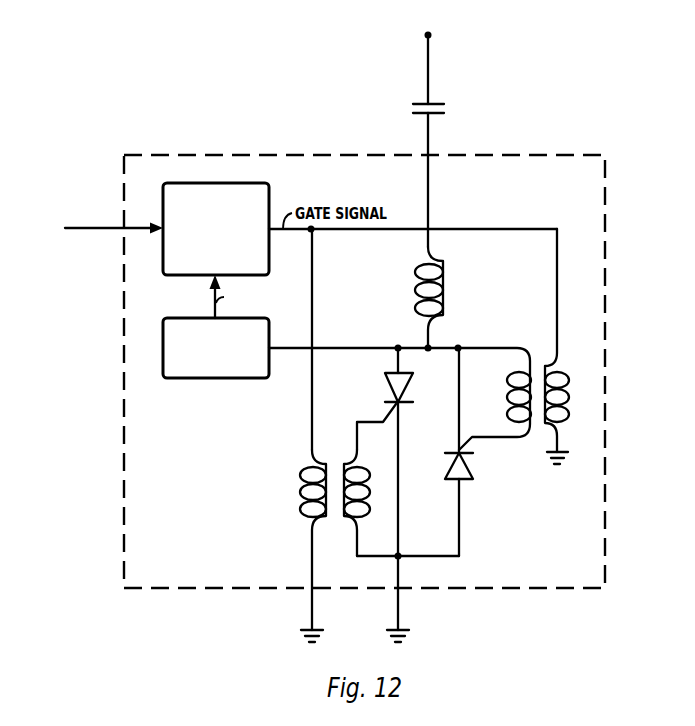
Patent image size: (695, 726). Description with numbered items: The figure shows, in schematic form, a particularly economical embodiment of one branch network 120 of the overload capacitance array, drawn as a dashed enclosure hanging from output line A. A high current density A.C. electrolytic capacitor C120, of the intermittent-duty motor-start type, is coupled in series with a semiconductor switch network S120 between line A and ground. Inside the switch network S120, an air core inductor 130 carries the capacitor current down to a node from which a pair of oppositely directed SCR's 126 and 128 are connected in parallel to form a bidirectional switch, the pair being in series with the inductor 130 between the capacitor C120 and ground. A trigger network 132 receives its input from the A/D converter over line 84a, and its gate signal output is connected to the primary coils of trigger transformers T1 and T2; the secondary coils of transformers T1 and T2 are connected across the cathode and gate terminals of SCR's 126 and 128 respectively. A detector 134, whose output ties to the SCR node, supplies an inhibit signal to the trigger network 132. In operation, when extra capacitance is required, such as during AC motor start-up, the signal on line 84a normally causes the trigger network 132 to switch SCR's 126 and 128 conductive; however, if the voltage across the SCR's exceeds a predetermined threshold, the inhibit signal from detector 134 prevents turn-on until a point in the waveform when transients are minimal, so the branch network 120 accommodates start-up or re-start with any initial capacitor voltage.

The branch network 120 is at (617, 136).
The semiconductor switch network S120 is at (636, 611).
The trigger network input line from A/D converter 84a is at (100, 228).
The trigger network 132 is at (215, 183).
The detector 134 is at (215, 378).
The A.C. electrolytic capacitor C120 is at (456, 127).
The air core inductor 130 is at (441, 312).
The SCR 126 is at (411, 383).
The SCR 128 is at (473, 463).
The trigger transformer T1 is at (537, 364).
The trigger transformer T2 is at (330, 446).